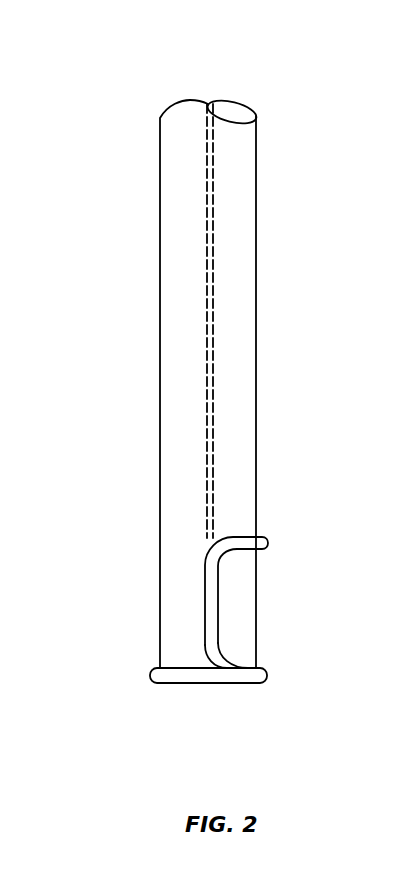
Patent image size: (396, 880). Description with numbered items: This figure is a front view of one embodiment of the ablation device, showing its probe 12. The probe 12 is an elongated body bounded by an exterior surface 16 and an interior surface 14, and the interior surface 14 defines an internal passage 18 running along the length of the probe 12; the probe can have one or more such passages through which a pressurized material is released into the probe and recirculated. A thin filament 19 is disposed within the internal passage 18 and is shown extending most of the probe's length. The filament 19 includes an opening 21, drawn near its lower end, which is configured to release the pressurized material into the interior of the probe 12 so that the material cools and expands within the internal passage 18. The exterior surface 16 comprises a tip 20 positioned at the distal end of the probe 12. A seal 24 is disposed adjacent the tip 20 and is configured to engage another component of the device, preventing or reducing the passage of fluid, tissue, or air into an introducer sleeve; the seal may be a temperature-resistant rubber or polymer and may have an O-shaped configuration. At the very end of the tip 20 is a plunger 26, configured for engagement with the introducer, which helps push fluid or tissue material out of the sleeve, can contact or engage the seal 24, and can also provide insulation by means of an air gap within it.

The probe 12 is at (141, 155).
The interior surface 14 is at (240, 110).
The exterior surface 16 is at (195, 388).
The internal passage 18 is at (204, 97).
The filament 19 is at (214, 293).
The tip 20 is at (183, 625).
The opening 21 is at (208, 540).
The seal 24 is at (245, 533).
The plunger 26 is at (197, 683).